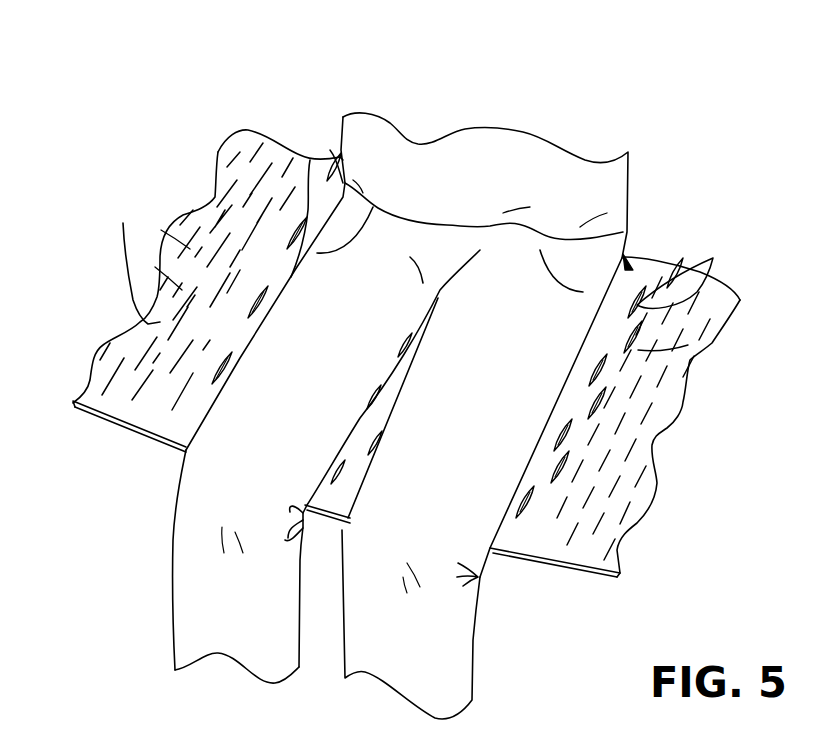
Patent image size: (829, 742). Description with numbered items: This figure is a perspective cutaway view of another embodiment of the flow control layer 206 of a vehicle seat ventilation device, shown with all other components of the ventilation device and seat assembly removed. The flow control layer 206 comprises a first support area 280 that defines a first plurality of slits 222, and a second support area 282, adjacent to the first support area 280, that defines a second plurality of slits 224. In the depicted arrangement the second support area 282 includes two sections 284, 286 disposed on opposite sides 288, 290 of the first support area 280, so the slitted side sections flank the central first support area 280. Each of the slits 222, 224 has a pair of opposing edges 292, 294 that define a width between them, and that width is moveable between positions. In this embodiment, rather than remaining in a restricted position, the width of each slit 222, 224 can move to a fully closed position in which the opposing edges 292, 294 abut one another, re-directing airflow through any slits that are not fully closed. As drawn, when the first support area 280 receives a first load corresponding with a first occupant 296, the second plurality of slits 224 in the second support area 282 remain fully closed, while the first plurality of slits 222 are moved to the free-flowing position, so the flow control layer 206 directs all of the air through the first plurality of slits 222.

The flow control layer 206 is at (228, 126).
The first plurality of slits 222 is at (322, 160).
The second plurality of slits 224 is at (160, 257).
The first support area 280 is at (698, 147).
The second support area 282 is at (344, 96).
The section of the second support area 284 is at (98, 410).
The section of the second support area 286 is at (583, 567).
The side of the first support area 288 is at (167, 438).
The side of the first support area 290 is at (512, 552).
The opposing edge of a slit 292 is at (637, 256).
The opposing edge of a slit 294 is at (713, 258).
The first occupant 296 is at (333, 150).